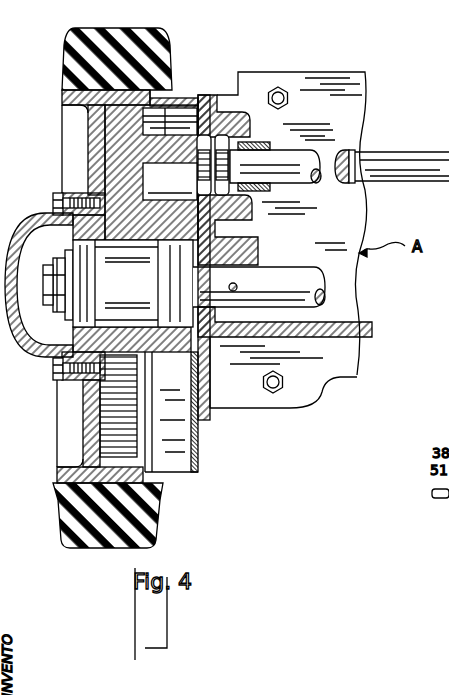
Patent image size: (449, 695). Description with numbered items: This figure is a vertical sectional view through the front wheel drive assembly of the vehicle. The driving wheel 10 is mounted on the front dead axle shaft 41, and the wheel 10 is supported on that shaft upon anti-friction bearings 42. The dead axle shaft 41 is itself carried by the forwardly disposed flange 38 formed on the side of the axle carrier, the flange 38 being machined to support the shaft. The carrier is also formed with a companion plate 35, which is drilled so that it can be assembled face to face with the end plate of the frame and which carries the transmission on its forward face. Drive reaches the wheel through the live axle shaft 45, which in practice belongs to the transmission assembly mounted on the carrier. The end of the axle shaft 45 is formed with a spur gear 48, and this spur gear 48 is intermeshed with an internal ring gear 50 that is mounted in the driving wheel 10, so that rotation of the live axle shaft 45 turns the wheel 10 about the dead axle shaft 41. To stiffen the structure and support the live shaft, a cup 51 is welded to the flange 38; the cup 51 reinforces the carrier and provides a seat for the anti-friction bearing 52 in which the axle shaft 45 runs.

The wheel 10 is at (83, 408).
The companion plate 35 is at (353, 93).
The flange 38 is at (213, 390).
The front dead axle shaft 41 is at (275, 272).
The anti-friction bearings 42 is at (165, 268).
The live axle shaft 45 is at (363, 149).
The spur gear 48 is at (110, 152).
The internal ring gear 50 is at (137, 371).
The cup 51 is at (180, 113).
The anti-friction bearing 52 is at (170, 181).